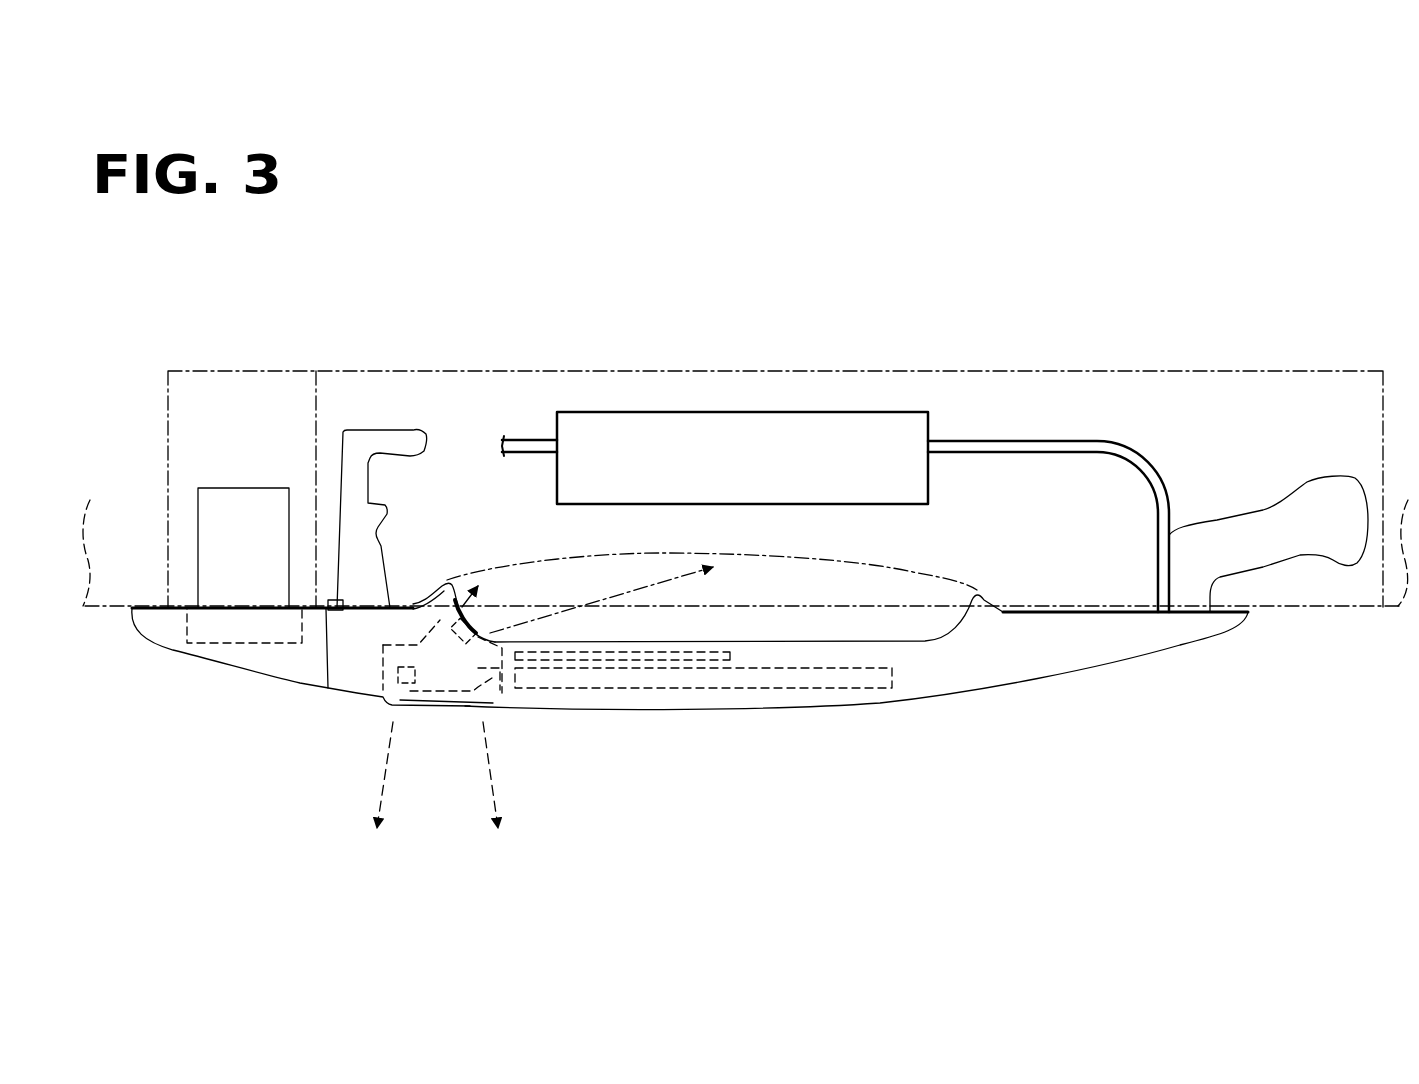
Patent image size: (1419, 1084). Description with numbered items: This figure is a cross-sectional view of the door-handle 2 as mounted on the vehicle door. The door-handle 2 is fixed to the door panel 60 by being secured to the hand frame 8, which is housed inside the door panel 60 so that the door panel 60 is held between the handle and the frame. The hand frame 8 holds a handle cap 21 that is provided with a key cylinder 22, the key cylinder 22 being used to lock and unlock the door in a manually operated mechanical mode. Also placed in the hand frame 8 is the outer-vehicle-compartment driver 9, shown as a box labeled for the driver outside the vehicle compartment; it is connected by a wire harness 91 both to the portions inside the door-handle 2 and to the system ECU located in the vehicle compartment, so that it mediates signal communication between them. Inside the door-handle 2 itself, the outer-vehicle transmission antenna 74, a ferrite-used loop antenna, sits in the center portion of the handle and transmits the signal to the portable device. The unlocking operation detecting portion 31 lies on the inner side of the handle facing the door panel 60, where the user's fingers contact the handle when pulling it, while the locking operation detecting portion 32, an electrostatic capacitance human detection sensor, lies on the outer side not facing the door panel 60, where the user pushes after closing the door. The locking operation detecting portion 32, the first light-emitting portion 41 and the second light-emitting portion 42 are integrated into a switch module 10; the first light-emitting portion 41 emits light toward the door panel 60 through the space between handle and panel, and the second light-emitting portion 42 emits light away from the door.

The door-handle 2 is at (1017, 693).
The hand frame 8 is at (1180, 372).
The outer-vehicle-compartment driver 9 is at (710, 412).
The wire harness 91 is at (526, 441).
The key cylinder 22 is at (213, 528).
The handle cap 21 is at (250, 660).
The switch module 10 is at (383, 653).
The first light-emitting portion 41 is at (480, 633).
The second light-emitting portion 42 is at (420, 707).
The unlocking operation detecting portion 31 is at (683, 647).
The locking operation detecting portion 32 is at (513, 700).
The outer-vehicle transmission antenna 74 is at (760, 690).
The door panel 60 is at (1280, 608).